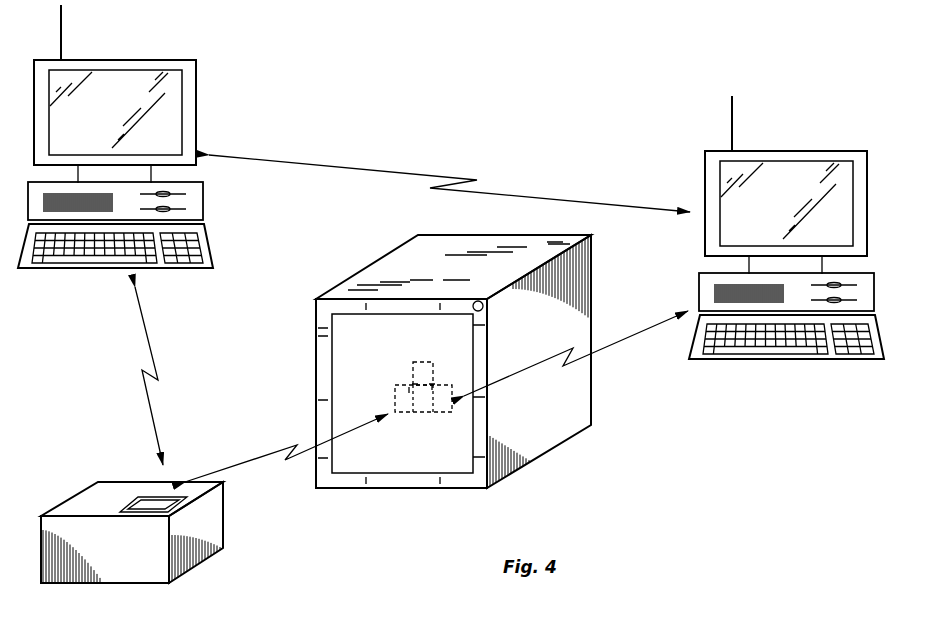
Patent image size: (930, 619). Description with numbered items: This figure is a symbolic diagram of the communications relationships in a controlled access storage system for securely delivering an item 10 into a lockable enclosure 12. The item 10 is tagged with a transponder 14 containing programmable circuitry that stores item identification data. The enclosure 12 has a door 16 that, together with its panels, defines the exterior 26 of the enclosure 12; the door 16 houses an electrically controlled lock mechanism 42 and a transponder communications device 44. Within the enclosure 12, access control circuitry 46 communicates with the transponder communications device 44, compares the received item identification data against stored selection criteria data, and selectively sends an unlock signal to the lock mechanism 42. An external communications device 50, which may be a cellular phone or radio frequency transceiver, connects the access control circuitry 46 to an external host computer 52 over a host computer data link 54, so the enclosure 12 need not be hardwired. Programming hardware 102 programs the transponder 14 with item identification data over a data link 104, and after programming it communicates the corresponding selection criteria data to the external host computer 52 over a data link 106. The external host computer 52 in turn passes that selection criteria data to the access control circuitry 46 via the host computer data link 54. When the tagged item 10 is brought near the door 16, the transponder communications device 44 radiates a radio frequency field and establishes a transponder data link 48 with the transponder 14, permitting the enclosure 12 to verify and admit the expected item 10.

The item 10 is at (222, 517).
The lockable enclosure 12 is at (400, 258).
The transponder 14 is at (163, 500).
The door 16 is at (375, 353).
The exterior 26 is at (557, 434).
The lock mechanism 42 is at (448, 383).
The transponder communications device 44 is at (396, 400).
The access control circuitry 46 is at (423, 413).
The transponder data link 48 is at (265, 457).
The external communications device 50 is at (421, 361).
The external host computer 52 is at (705, 178).
The host computer data link 54 is at (635, 333).
The programming hardware 102 is at (197, 97).
The data link 104 is at (163, 372).
The data link 106 is at (432, 175).